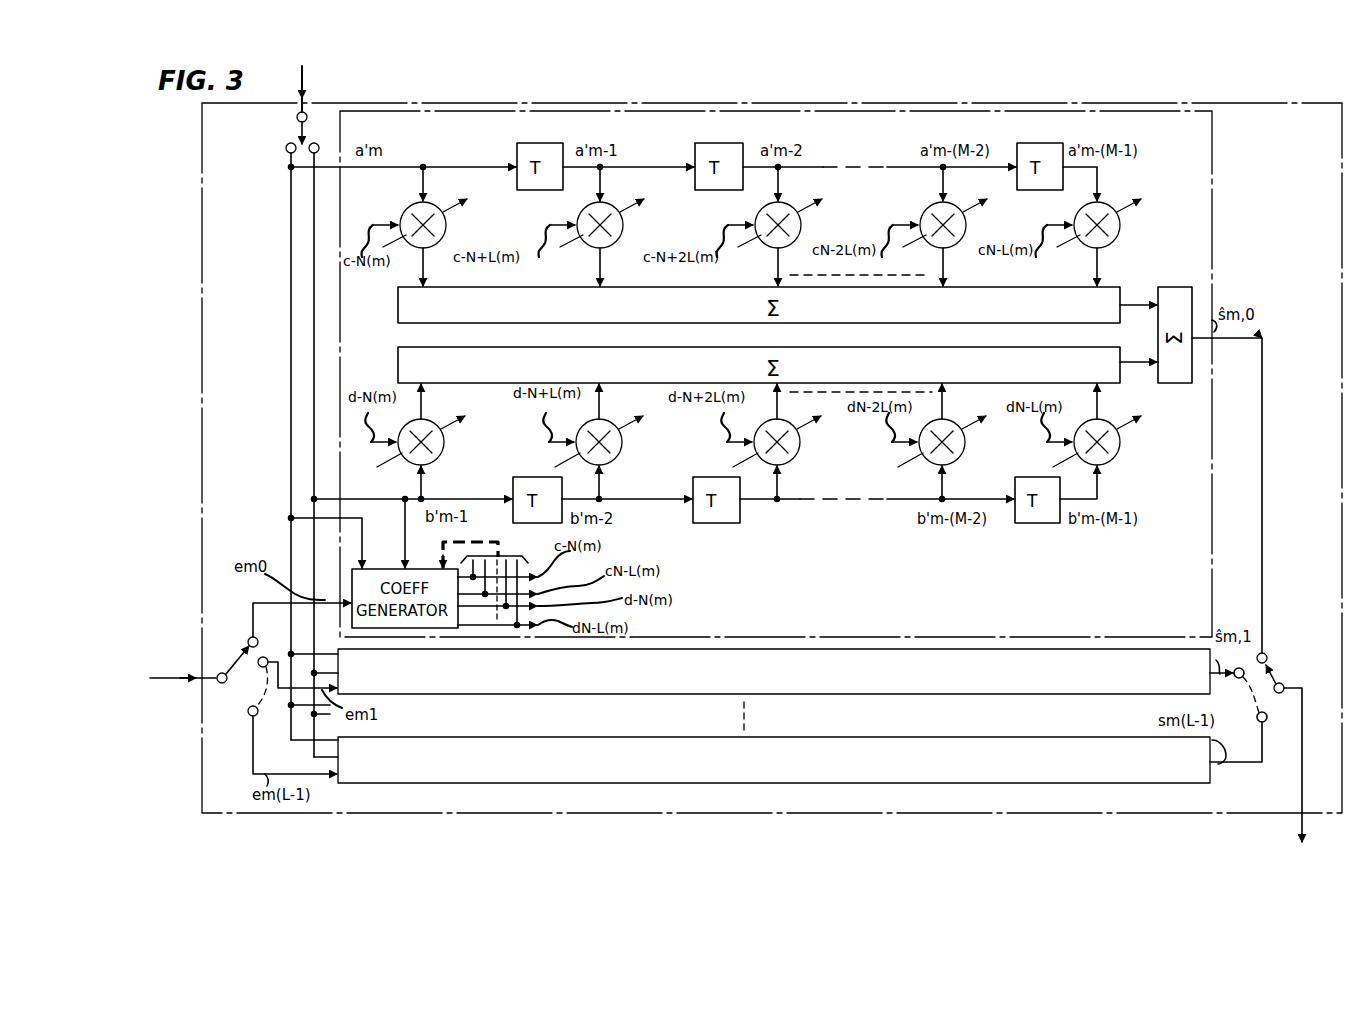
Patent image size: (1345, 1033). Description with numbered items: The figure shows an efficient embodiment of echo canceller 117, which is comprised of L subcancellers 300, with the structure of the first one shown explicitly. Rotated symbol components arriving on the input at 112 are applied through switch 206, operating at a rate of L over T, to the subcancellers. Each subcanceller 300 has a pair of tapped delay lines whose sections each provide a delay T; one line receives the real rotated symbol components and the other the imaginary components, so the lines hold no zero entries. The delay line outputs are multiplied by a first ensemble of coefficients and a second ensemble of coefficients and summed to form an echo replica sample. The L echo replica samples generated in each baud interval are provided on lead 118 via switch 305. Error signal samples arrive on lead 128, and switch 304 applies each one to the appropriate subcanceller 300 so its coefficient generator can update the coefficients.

The echo canceller 117 is at (772, 443).
The input data signal lead 112 is at (304, 76).
The switch 206 is at (300, 118).
The subcanceller 300 is at (775, 447).
The lead 128 is at (178, 668).
The switch 304 is at (236, 700).
The switch 305 is at (1276, 684).
The lead 118 is at (1302, 797).